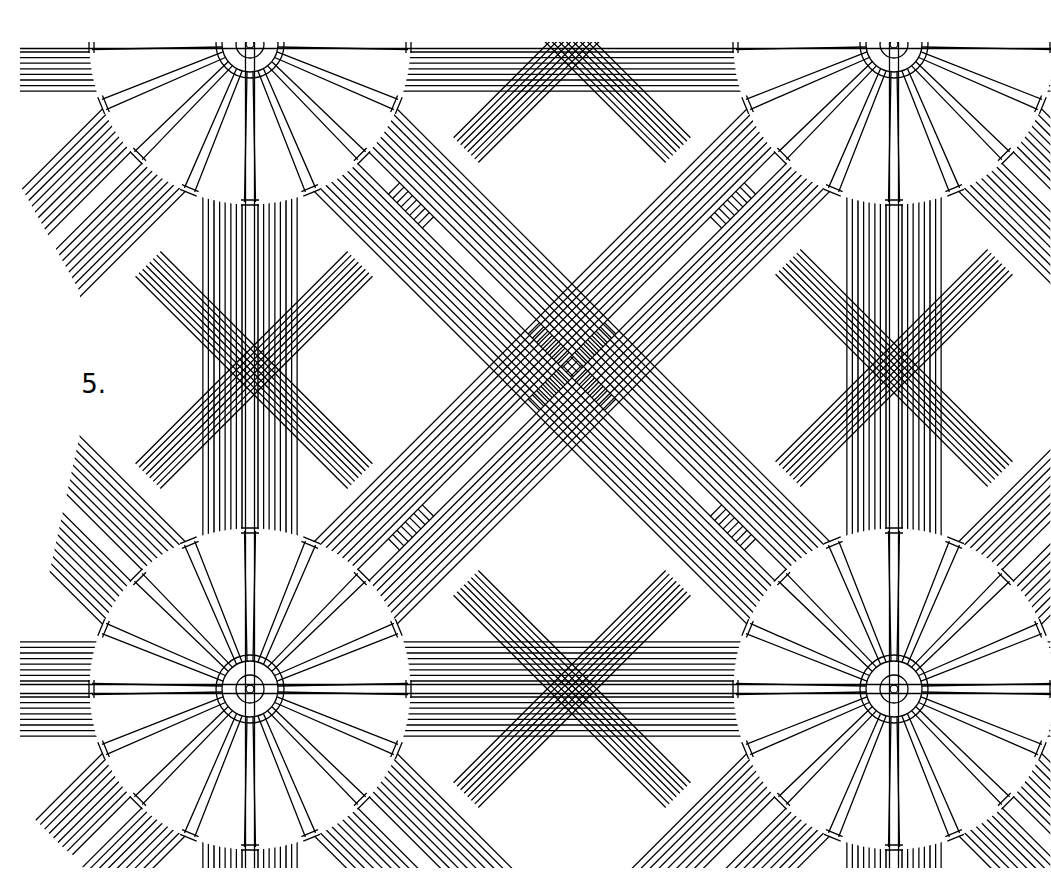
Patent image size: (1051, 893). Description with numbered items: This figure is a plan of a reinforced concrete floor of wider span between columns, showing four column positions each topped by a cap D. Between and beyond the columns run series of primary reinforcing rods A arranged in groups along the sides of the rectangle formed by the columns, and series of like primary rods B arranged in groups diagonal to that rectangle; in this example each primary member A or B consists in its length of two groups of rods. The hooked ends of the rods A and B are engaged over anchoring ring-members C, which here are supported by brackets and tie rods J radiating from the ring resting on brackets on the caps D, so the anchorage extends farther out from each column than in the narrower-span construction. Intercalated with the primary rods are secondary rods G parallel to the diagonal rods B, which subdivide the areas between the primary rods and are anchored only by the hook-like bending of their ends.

The primary reinforcing rods A is at (65, 80).
The primary reinforcing rods B is at (68, 160).
The anchoring ring-members C is at (405, 92).
The caps D is at (232, 72).
The secondary rods G is at (495, 138).
The tie rods J is at (175, 85).